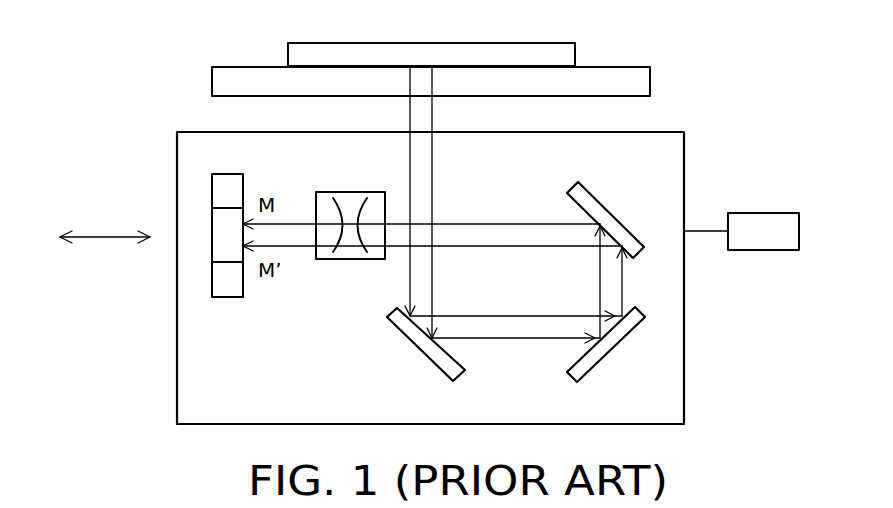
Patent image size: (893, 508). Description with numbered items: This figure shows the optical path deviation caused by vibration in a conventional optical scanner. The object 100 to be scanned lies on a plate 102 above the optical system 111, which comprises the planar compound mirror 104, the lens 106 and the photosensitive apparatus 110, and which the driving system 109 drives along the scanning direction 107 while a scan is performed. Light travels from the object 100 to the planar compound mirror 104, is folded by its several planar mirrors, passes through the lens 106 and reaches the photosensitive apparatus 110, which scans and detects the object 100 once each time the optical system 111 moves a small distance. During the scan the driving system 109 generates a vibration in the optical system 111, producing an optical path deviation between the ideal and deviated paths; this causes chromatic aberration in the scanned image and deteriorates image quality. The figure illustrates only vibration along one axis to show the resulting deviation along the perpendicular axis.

The object 100 is at (575, 53).
The stage 102 is at (618, 88).
The planar compound mirror 104 is at (605, 212).
The lens 106 is at (350, 190).
The scanning direction 107 is at (103, 238).
The driving system 109 is at (760, 237).
The photosensitive apparatus 110 is at (230, 292).
The optical system 111 is at (674, 425).